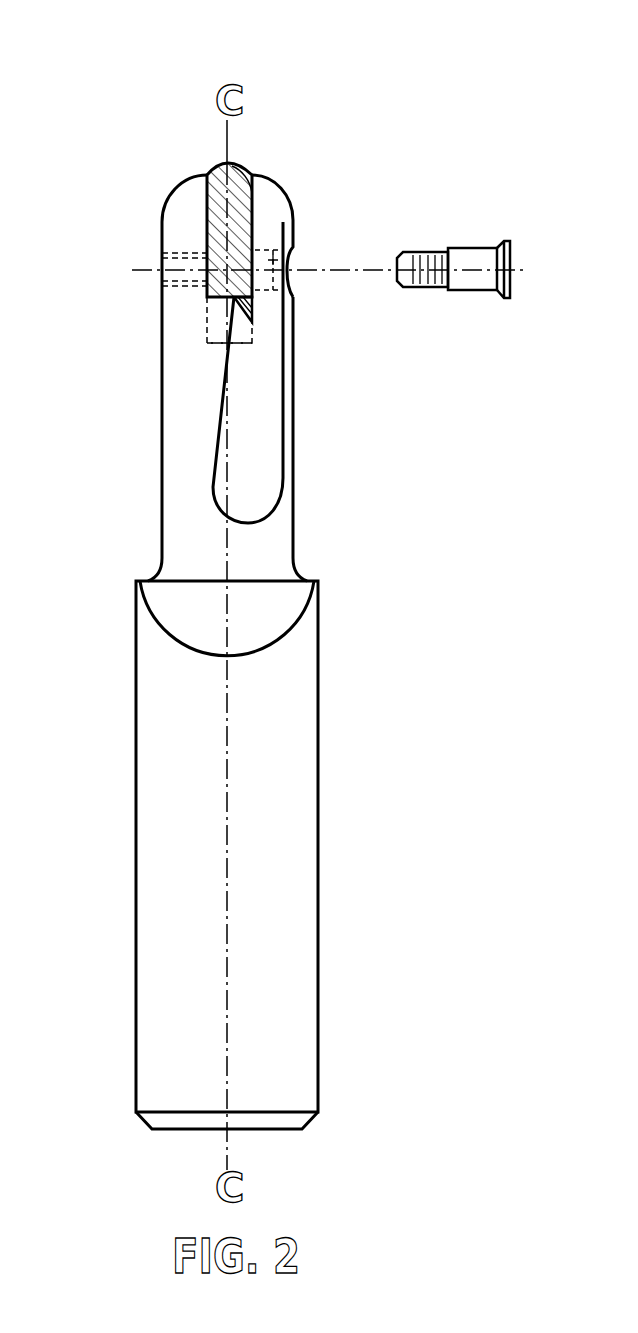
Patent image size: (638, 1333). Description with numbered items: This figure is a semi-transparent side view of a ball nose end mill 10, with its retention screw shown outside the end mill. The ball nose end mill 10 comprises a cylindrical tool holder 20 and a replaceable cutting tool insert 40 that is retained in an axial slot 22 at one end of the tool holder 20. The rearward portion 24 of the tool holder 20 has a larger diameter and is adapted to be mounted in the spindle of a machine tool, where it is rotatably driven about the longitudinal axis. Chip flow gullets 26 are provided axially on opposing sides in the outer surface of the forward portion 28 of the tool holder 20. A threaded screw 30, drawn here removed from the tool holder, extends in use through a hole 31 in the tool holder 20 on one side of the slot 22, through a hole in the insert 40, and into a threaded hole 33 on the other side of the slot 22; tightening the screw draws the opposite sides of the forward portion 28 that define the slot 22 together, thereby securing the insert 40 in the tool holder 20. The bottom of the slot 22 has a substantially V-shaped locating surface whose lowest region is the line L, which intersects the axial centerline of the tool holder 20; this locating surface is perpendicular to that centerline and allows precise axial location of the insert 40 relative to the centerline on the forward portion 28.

The ball nose end mill 10 is at (295, 44).
The tool holder 20 is at (298, 623).
The axial slot 22 is at (202, 152).
The rearward portion 24 is at (298, 930).
The chip flow gullet 26 is at (270, 452).
The forward portion 28 is at (192, 418).
The threaded screw 30 is at (474, 250).
The hole 31 is at (286, 268).
The threaded hole 33 is at (185, 252).
The replaceable cutting tool insert 40 is at (232, 178).
The line L is at (236, 343).